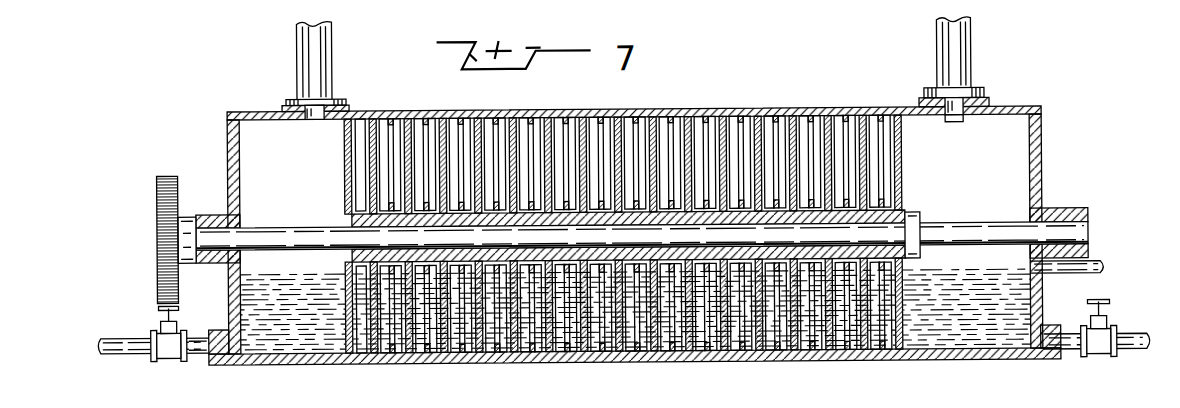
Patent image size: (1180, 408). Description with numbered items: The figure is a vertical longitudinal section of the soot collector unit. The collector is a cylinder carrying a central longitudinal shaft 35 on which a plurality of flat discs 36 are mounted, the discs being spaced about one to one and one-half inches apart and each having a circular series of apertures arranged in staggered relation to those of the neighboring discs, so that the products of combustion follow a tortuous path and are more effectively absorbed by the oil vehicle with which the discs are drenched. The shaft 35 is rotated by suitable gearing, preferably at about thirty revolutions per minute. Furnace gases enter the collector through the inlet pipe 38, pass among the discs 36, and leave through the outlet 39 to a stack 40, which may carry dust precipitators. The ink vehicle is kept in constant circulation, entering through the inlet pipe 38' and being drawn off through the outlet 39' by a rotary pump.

The shaft 35 is at (983, 213).
The flat discs 36 is at (752, 128).
The inlet pipe 38 is at (293, 70).
The inlet pipe 38' is at (153, 352).
The outlet 39 is at (973, 135).
The outlet 39' is at (1096, 281).
The stack 40 is at (958, 53).